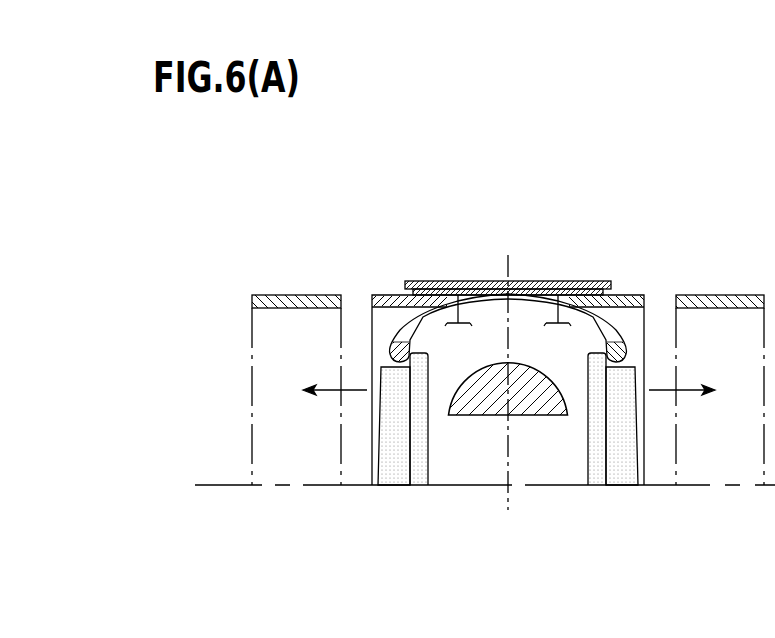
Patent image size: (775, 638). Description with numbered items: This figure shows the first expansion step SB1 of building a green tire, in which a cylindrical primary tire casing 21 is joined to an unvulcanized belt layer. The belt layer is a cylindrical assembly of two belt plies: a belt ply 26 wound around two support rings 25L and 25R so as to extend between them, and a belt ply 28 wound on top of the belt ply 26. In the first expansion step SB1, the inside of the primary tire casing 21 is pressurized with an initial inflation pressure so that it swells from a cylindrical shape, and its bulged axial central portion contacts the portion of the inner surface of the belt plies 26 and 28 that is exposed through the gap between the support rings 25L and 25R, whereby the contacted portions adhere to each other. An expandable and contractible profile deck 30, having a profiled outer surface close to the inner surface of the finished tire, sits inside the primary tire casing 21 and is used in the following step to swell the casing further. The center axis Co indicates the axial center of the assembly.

The primary tire casing 21 is at (406, 333).
The support ring 25L is at (377, 307).
The support ring 25R is at (622, 295).
The belt ply 26 is at (433, 291).
The belt ply 28 is at (468, 281).
The profile deck 30 is at (492, 393).
The center axis Co is at (508, 368).
The first expansion step SB1 is at (604, 240).